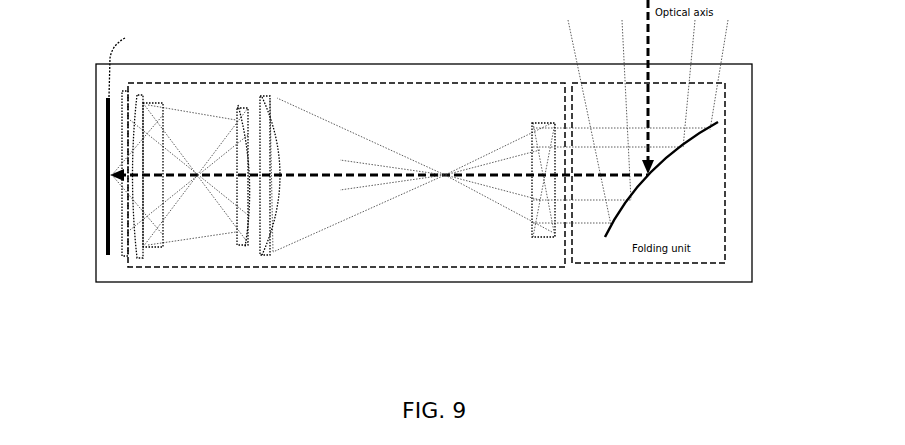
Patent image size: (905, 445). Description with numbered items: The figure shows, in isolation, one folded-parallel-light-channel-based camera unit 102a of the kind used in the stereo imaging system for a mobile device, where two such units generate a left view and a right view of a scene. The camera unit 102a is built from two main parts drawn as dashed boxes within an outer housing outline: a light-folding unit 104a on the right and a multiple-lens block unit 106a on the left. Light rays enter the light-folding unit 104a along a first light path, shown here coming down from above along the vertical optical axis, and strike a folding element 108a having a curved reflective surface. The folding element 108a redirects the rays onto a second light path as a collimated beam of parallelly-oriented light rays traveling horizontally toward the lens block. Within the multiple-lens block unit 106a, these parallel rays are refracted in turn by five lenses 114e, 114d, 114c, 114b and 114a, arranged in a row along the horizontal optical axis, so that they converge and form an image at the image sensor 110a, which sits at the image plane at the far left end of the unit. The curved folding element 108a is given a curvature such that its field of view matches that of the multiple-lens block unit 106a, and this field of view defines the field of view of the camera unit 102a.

The FPLC-based camera unit 102a is at (764, 180).
The light-folding unit 104a is at (727, 137).
The multiple-lens block unit 106a is at (312, 83).
The folding element 108a is at (633, 205).
The image sensor 110a is at (105, 217).
The lens 114a is at (135, 238).
The lens 114b is at (163, 243).
The lens 114c is at (245, 247).
The lens 114d is at (272, 215).
The lens 114e is at (543, 207).